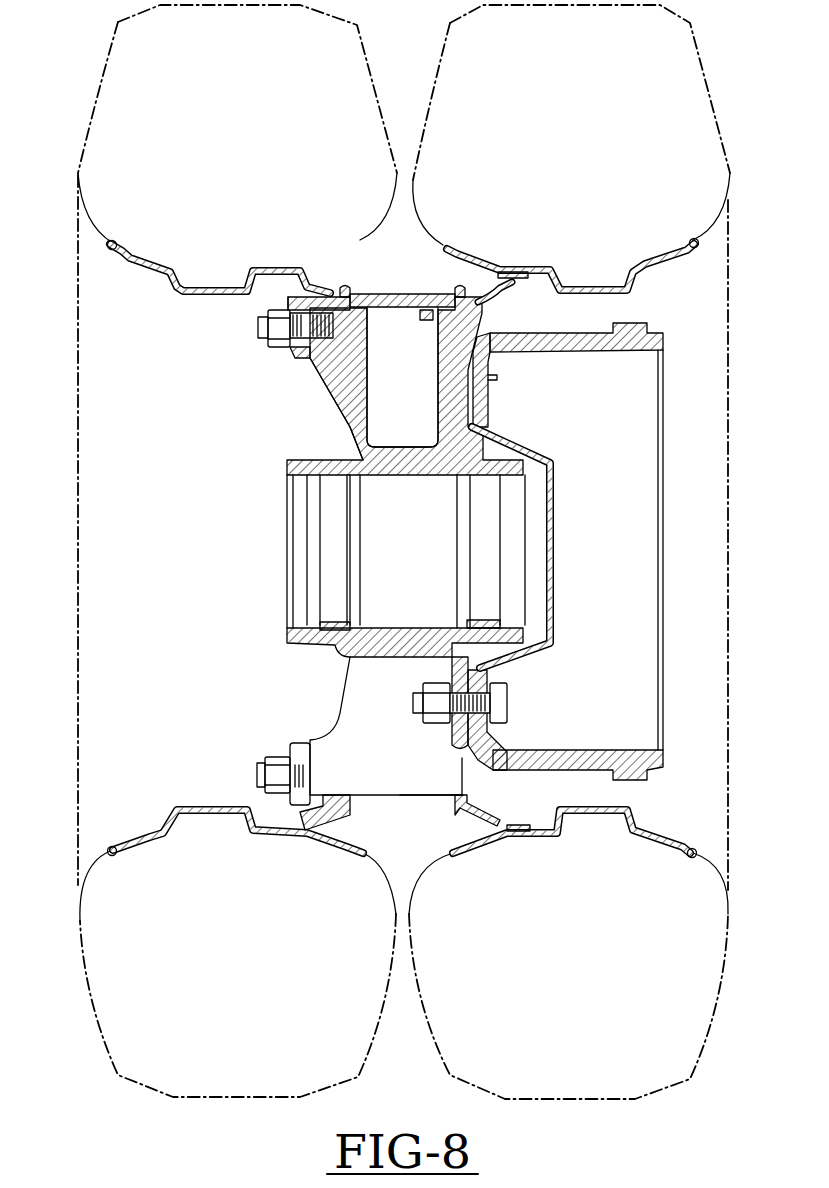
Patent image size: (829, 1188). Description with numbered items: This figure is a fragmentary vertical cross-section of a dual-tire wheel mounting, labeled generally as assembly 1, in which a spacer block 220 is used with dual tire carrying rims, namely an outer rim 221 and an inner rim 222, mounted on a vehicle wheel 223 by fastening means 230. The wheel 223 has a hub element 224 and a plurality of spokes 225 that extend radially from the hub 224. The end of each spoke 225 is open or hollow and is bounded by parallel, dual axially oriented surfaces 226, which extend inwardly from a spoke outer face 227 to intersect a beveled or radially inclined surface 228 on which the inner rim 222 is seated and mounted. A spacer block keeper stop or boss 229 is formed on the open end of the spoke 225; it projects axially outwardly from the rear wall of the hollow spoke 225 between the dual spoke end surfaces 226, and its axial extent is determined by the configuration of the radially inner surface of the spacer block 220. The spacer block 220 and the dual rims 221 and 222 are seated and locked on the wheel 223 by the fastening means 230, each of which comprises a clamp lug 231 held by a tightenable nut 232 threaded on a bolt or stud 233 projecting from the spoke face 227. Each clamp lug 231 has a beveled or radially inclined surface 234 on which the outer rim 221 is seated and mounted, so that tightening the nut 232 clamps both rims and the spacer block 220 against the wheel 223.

The dual wheel assembly 1 is at (445, 23).
The spacer block 220 is at (390, 292).
The outer tire carrying rim 221 is at (167, 278).
The inner tire carrying rim 222 is at (563, 267).
The wheel 223 is at (287, 577).
The hub element 224 is at (429, 536).
The spoke 225 is at (343, 413).
The axially oriented surfaces 226 is at (455, 290).
The spoke outer face 227 is at (290, 297).
The radially inclined surface 228 is at (480, 296).
The keeper stop 229 is at (437, 320).
The fastening means 230 is at (245, 317).
The clamp lug 231 is at (302, 358).
The tightenable nut 232 is at (273, 350).
The bolt or stud 233 is at (257, 333).
The radially inclined surface 234 is at (330, 290).